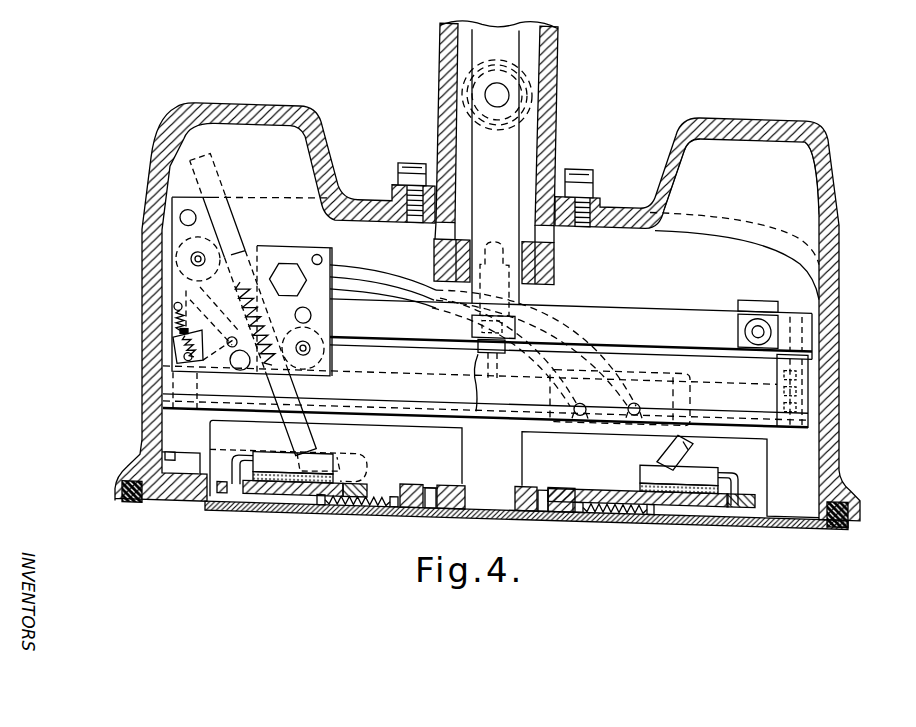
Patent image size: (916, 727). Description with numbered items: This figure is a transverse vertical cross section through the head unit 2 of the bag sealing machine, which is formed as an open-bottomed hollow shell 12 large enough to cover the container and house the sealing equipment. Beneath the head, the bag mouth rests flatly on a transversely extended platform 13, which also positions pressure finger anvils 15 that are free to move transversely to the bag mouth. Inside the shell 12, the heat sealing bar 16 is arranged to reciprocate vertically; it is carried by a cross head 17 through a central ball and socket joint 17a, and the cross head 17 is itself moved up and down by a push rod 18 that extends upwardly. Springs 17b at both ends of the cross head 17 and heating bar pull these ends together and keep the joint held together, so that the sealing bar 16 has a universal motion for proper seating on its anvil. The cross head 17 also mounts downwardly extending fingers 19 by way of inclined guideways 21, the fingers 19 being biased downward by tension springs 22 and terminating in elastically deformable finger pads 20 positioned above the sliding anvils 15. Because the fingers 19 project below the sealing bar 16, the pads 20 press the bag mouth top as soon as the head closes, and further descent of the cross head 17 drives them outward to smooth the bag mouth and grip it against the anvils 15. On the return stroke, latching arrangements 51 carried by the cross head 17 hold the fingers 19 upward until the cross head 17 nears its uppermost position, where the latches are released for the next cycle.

The head unit 2 is at (832, 112).
The hollow shell 12 is at (722, 111).
The platform 13 is at (345, 508).
The pressure finger anvils 15 is at (295, 492).
The heat sealing bar 16 is at (430, 401).
The cross head 17 is at (672, 313).
The ball and socket joint 17a is at (490, 386).
The springs 17b is at (810, 373).
The push rod 18 is at (506, 150).
The fingers 19 is at (300, 440).
The finger pads 20 is at (340, 475).
The inclined guideways 21 is at (256, 257).
The tension springs 22 is at (252, 292).
The latching arrangements 51 is at (165, 305).